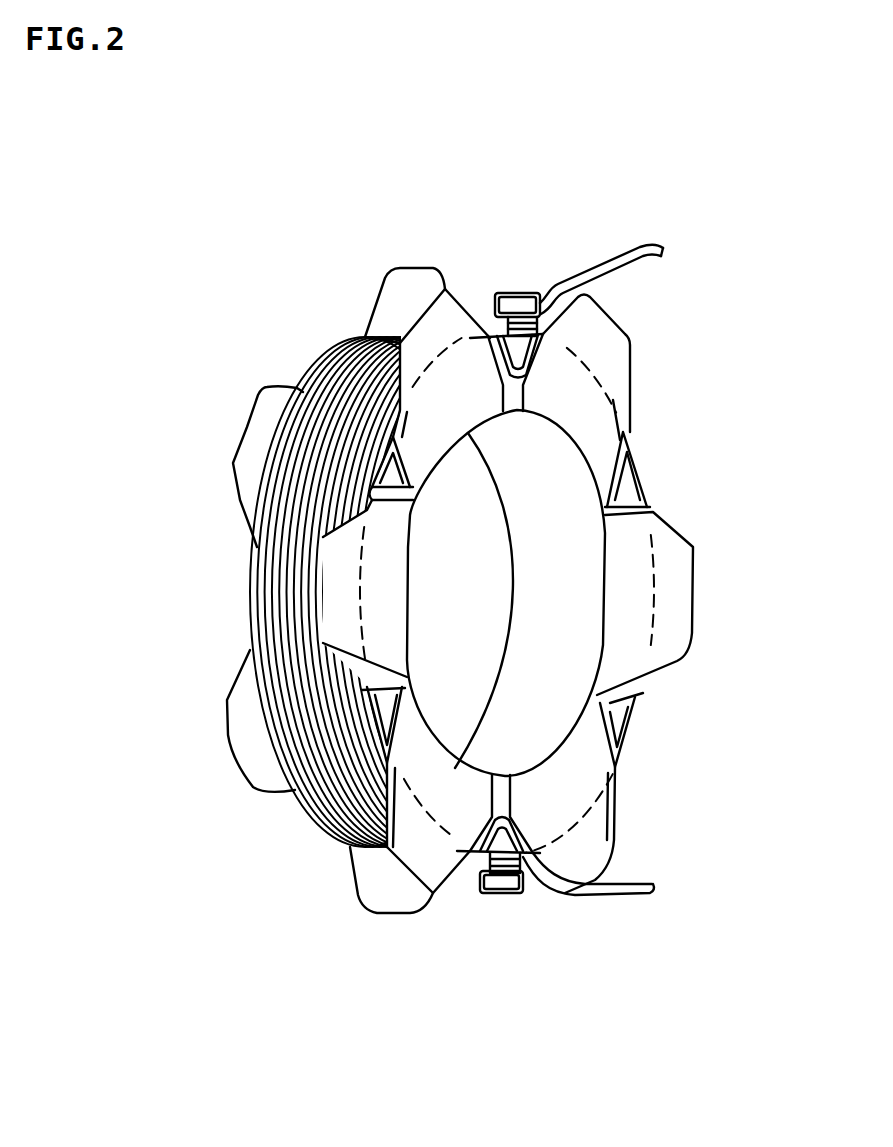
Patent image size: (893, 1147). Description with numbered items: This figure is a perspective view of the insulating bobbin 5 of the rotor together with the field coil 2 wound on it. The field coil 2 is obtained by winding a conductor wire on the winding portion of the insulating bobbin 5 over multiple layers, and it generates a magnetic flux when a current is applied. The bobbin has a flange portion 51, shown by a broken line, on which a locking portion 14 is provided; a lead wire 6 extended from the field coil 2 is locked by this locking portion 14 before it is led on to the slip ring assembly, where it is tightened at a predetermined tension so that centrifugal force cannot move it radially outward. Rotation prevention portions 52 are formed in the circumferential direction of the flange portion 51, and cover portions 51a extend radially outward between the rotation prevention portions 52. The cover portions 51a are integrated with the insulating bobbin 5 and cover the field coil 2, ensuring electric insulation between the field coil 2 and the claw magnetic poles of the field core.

The field coil 2 is at (230, 578).
The insulating bobbin 5 is at (640, 393).
The flange portion 51 is at (650, 649).
The cover portion 51a is at (234, 464).
The rotation prevention portion 52 is at (643, 477).
The locking portion 14 is at (513, 290).
The lead wire 6 is at (630, 270).